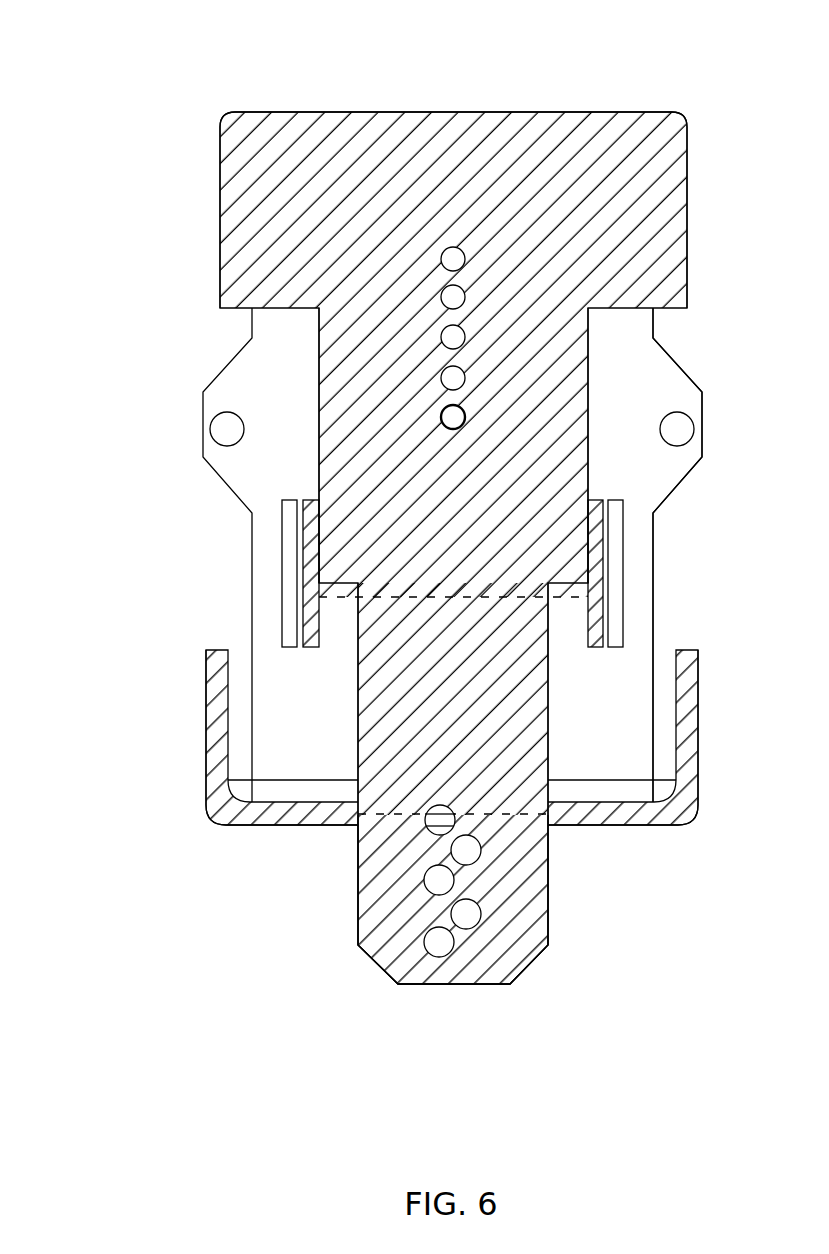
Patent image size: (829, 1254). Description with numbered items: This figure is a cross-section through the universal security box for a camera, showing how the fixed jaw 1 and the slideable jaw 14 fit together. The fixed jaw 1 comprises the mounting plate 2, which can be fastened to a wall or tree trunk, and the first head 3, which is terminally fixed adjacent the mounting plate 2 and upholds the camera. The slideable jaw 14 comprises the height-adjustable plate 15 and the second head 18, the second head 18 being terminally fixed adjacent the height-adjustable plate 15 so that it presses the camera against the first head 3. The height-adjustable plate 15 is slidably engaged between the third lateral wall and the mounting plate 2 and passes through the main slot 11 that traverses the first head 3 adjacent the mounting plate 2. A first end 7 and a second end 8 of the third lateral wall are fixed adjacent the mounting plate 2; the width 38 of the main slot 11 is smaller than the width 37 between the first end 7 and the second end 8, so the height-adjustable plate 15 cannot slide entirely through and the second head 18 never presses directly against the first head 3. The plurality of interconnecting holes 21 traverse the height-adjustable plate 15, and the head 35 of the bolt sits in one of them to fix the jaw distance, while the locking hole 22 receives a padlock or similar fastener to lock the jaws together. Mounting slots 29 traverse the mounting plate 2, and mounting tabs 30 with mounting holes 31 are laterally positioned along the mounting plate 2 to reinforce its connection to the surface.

The fixed jaw 1 is at (180, 695).
The mounting plate 2 is at (645, 561).
The first head 3 is at (205, 665).
The first end 7 is at (313, 500).
The second end 8 is at (593, 500).
The main slot 11 is at (355, 780).
The slideable jaw 14 is at (192, 212).
The height-adjustable plate 15 is at (587, 393).
The second head 18 is at (677, 118).
The plurality of interconnecting holes 21 is at (441, 259).
The locking hole 22 is at (428, 810).
The mounting slot 29 is at (286, 648).
The mounting tab 30 is at (207, 455).
The mounting hole 31 is at (217, 429).
The head 35 is at (441, 417).
The width 37 is at (565, 600).
The width 38 is at (535, 814).